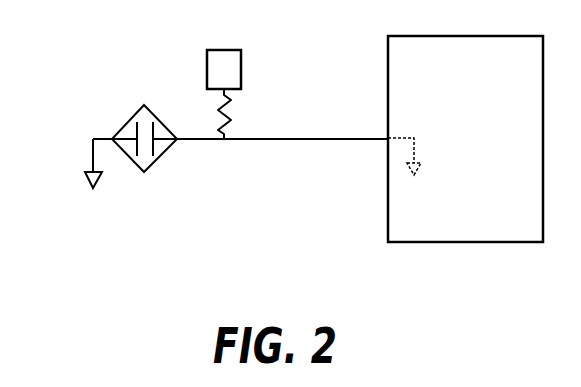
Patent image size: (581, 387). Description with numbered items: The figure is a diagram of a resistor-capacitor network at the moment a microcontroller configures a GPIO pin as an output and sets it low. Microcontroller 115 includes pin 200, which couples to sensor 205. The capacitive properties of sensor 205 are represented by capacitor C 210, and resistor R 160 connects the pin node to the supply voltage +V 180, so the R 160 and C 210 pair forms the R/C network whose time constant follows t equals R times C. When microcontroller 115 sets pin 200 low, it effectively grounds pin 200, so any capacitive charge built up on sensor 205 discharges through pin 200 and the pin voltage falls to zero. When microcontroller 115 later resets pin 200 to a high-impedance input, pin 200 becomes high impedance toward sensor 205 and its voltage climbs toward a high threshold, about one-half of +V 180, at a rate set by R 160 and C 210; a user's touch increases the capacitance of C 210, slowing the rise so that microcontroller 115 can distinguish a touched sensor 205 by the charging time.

The microcontroller 115 is at (465, 139).
The resistor R 160 is at (222, 113).
The voltage supply +V 180 is at (225, 50).
The pin 200 is at (387, 137).
The sensor 205 is at (152, 165).
The capacitor C 210 is at (133, 133).